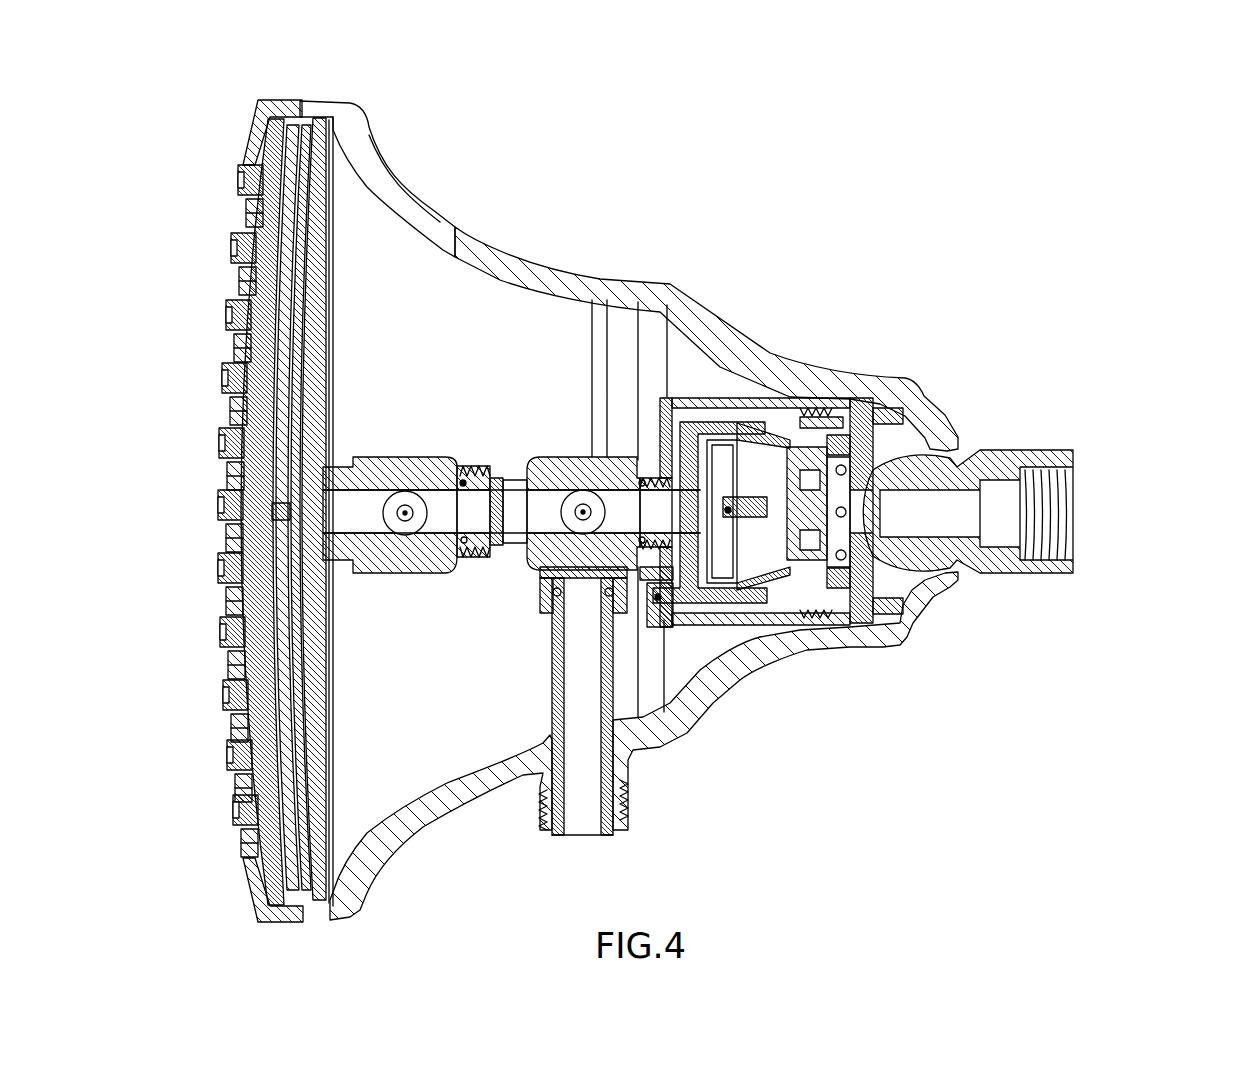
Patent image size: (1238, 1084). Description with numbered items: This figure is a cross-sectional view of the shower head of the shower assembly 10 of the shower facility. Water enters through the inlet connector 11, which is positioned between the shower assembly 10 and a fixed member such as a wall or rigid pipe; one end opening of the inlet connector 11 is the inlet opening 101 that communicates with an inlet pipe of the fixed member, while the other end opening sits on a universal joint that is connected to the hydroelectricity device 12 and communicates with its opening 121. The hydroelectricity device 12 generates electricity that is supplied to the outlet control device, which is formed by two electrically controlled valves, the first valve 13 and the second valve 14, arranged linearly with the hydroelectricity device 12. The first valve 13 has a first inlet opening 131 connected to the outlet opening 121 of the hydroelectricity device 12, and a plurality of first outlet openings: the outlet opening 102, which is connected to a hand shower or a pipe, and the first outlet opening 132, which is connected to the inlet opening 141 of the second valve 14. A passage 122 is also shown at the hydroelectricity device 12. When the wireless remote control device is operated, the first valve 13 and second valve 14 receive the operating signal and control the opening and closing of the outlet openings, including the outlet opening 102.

The shower assembly 10 is at (197, 184).
The inlet opening 101 is at (1080, 525).
The outlet opening 102 is at (575, 838).
The inlet connector 11 is at (1027, 565).
The hydroelectricity device 12 is at (788, 550).
The outlet opening of the hydroelectricity device 121 is at (860, 493).
The inlet passage 122 is at (655, 510).
The first valve 13 is at (575, 460).
The first inlet opening 131 is at (620, 510).
The first outlet opening 132 is at (513, 505).
The second valve 14 is at (415, 457).
The inlet opening of the second valve 141 is at (473, 510).